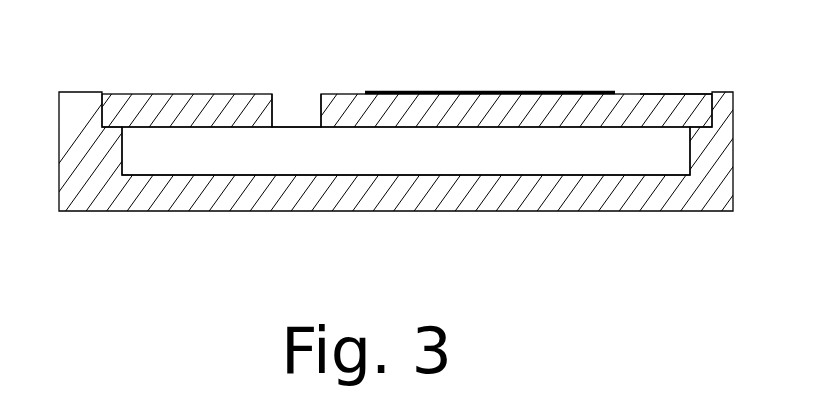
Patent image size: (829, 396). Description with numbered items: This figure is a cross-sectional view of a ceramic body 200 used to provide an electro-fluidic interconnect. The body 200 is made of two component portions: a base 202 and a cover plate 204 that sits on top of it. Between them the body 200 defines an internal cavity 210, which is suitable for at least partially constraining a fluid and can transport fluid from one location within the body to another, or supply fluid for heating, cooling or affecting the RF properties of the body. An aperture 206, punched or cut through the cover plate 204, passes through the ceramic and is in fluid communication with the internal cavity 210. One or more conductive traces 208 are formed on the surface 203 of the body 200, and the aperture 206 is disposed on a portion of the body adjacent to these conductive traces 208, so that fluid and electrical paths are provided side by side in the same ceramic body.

The body 200 is at (163, 255).
The base 202 is at (641, 211).
The surface 203 is at (654, 94).
The cover plate 204 is at (187, 93).
The aperture 206 is at (319, 101).
The conductive traces 208 is at (515, 92).
The internal cavity 210 is at (438, 166).